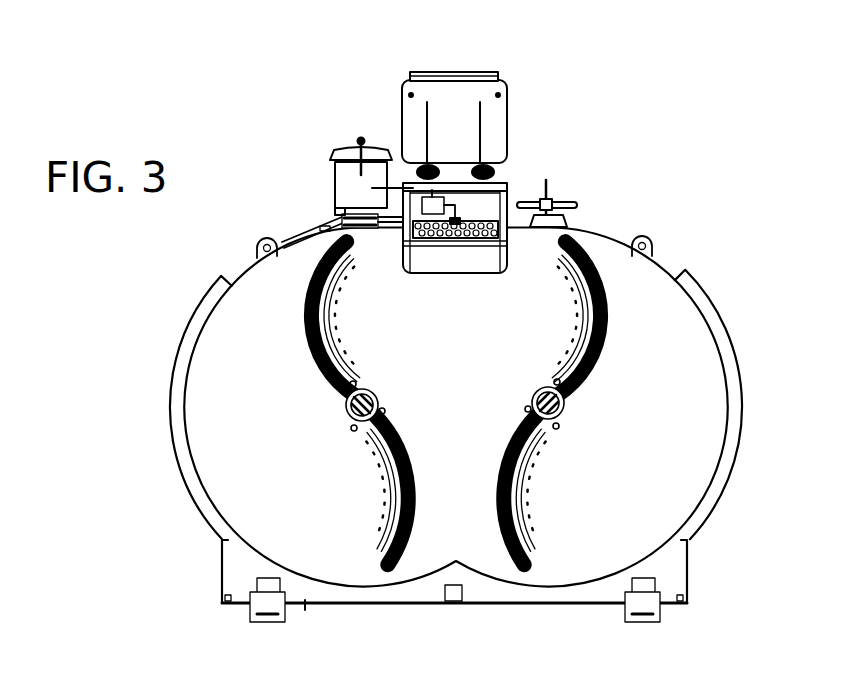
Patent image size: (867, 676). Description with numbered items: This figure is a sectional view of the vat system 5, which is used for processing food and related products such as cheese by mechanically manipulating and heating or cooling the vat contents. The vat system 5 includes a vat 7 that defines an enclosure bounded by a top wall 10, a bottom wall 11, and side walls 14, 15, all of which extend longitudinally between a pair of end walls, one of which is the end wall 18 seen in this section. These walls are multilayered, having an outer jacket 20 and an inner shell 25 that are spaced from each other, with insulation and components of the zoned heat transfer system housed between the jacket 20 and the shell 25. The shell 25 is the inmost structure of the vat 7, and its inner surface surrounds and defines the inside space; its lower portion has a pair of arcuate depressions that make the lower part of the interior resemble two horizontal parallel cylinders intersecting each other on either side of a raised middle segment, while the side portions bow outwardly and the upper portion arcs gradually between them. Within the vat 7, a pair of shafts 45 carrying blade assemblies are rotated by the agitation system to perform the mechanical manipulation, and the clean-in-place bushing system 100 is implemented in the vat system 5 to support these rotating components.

The vat system 5 is at (564, 97).
The vat 7 is at (288, 233).
The top wall 10 is at (596, 230).
The bottom wall 11 is at (578, 604).
The side wall 14 is at (741, 367).
The side wall 15 is at (180, 470).
The end wall 18 is at (469, 423).
The outer jacket 20 is at (178, 328).
The inner shell 25 is at (176, 398).
The shaft 45 is at (372, 392).
The clean-in-place bushing system 100 is at (336, 418).